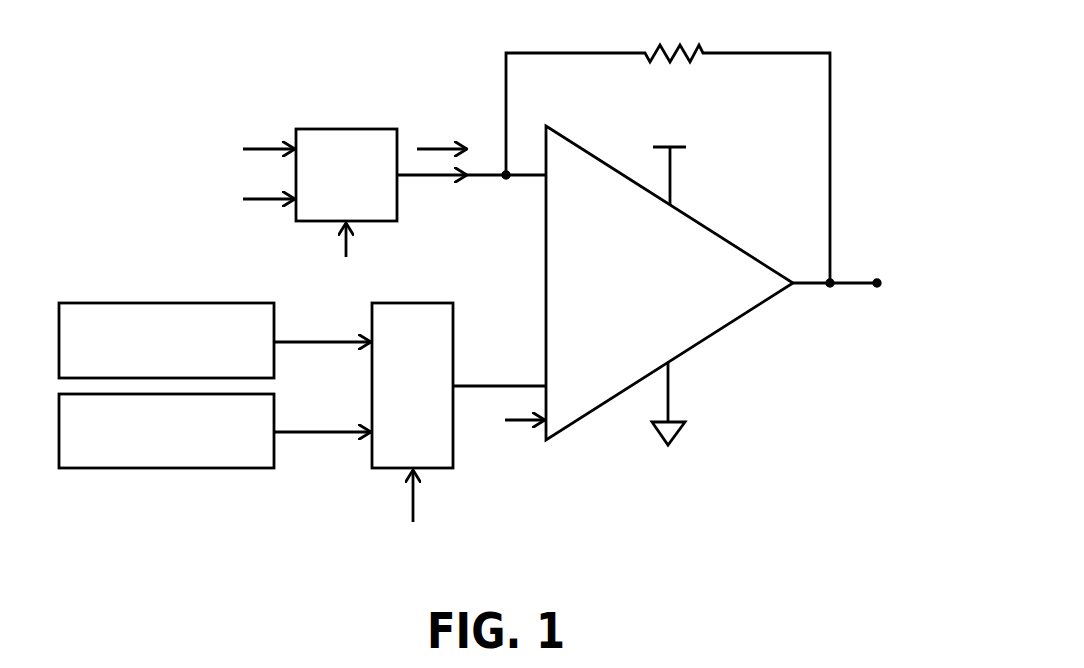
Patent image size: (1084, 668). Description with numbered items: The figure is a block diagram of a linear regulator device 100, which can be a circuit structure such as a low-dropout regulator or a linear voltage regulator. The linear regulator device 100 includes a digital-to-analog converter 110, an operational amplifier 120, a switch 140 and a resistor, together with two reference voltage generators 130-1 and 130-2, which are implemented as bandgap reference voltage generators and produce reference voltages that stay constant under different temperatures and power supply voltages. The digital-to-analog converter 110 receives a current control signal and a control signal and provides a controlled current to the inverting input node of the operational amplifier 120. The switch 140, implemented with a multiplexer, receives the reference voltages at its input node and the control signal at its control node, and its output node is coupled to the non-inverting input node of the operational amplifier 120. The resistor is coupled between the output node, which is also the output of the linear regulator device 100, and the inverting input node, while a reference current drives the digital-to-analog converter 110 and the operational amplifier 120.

The linear regulator device 100 is at (913, 535).
The digital-to-analog converter 110 is at (347, 129).
The operational amplifier 120 is at (708, 228).
The reference voltage generator 130-1 is at (178, 303).
The reference voltage generator 130-2 is at (178, 468).
The switch 140 is at (434, 400).